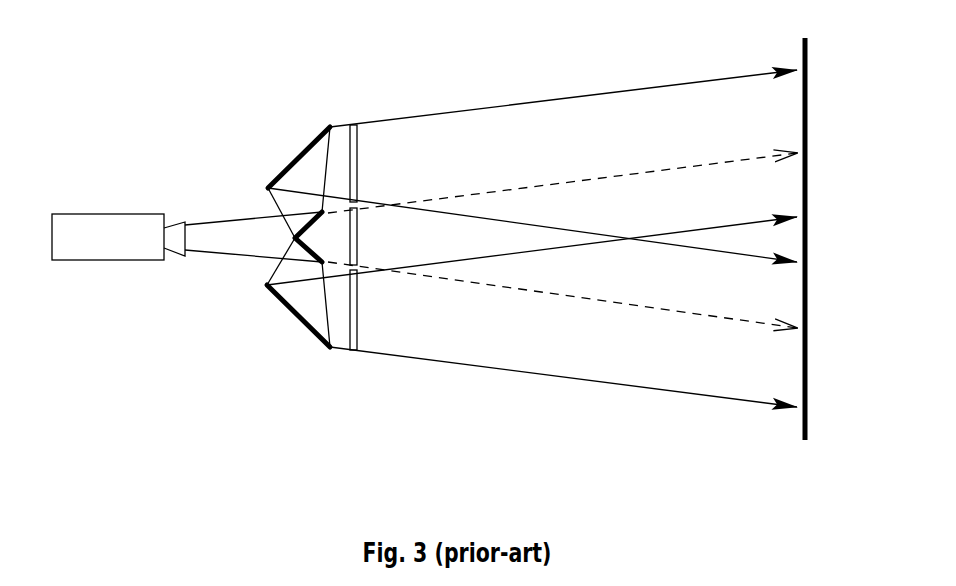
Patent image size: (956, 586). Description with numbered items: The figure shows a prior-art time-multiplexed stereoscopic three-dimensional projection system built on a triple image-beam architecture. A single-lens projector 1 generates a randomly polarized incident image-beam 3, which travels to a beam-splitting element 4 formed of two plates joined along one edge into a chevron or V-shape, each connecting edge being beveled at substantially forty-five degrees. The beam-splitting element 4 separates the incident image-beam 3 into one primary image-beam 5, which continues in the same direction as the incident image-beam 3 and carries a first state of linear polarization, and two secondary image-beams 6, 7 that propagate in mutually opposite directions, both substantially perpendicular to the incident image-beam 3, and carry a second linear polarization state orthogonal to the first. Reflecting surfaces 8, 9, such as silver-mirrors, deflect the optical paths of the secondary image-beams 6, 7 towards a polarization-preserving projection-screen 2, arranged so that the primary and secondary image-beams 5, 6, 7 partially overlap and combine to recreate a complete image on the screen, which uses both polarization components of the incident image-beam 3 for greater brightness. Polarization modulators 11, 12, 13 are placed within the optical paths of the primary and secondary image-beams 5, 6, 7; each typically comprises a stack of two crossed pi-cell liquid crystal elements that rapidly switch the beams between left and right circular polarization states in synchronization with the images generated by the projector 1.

The single-lens projector 1 is at (117, 208).
The polarization-preserving projection-screen 2 is at (813, 48).
The incident image-beam 3 is at (222, 218).
The beam-splitting element 4 is at (287, 238).
The primary image-beam 5 is at (560, 177).
The secondary image-beam 6 is at (650, 83).
The secondary image-beam 7 is at (647, 393).
The reflecting surface 8 is at (307, 138).
The reflecting surface 9 is at (303, 340).
The polarization modulator 11 is at (368, 118).
The polarization modulator 12 is at (368, 238).
The polarization modulator 13 is at (365, 357).